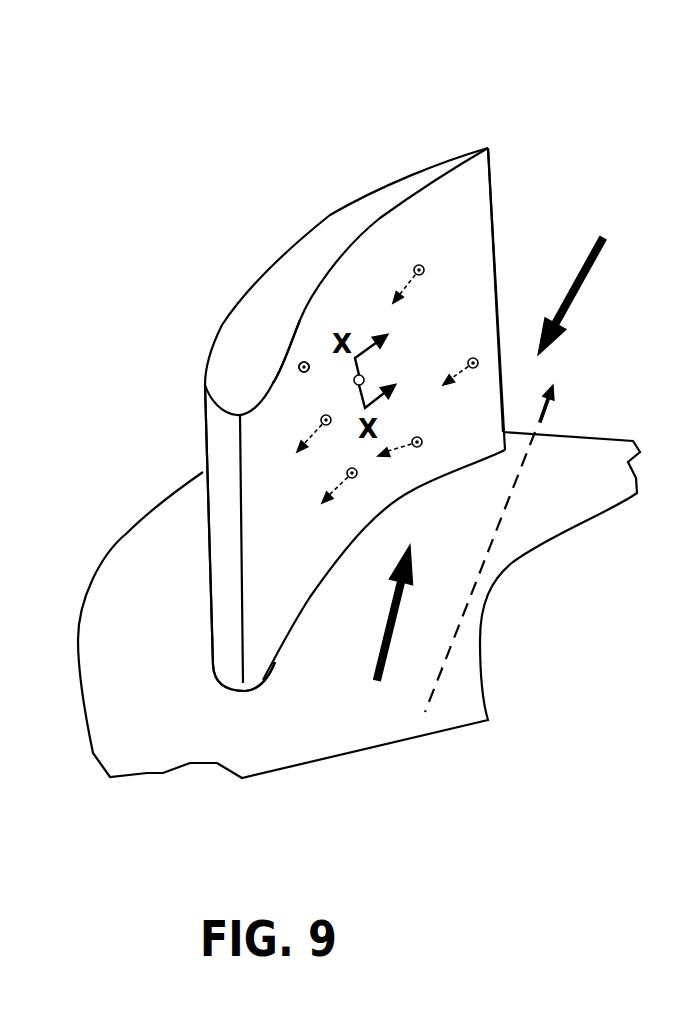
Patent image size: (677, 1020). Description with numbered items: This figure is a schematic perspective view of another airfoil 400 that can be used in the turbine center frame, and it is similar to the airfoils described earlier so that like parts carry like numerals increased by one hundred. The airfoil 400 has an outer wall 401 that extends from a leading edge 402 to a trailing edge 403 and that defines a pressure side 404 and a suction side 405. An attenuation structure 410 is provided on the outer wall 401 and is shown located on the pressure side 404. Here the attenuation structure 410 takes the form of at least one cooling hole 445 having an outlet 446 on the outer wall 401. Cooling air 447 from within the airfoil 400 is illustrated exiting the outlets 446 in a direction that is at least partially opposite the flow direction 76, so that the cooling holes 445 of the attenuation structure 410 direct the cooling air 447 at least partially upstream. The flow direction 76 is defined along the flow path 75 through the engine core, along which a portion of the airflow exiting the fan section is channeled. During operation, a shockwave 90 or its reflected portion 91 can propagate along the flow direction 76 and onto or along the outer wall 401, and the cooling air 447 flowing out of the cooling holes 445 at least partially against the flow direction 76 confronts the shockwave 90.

The airfoil 400 is at (448, 98).
The outer wall 401 is at (365, 213).
The leading edge 402 is at (243, 660).
The trailing edge 403 is at (495, 230).
The pressure side 404 is at (265, 660).
The suction side 405 is at (230, 660).
The attenuation structure 410 is at (306, 407).
The cooling hole 445 is at (295, 362).
The outlet 446 is at (304, 362).
The cooling air 447 is at (410, 280).
The flow path 75 is at (190, 452).
The flow direction 76 is at (467, 602).
The shockwave 90 is at (387, 630).
The reflected portion 91 is at (600, 260).